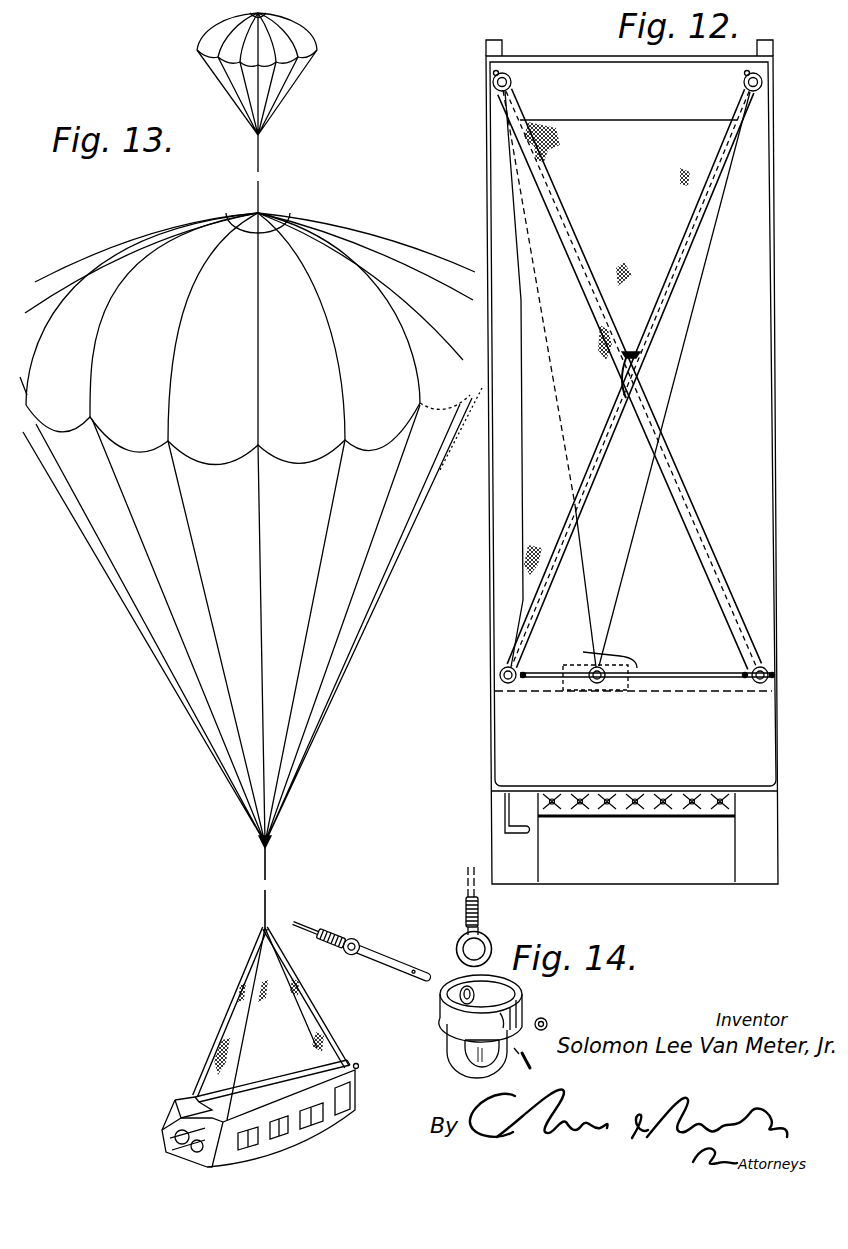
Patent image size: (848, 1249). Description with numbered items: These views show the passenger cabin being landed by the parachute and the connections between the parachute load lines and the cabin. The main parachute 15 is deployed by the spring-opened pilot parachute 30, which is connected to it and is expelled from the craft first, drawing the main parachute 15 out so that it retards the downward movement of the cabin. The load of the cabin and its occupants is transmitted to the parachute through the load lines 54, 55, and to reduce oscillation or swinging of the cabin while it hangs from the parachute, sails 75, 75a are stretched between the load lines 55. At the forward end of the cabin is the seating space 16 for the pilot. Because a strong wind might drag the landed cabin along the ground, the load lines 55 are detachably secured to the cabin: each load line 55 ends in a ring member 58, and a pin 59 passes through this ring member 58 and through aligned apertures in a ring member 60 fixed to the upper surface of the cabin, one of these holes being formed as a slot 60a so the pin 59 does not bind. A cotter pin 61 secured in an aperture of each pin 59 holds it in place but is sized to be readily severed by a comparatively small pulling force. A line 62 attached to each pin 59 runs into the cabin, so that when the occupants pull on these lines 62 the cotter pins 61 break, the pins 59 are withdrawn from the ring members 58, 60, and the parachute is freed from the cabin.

In FIG. 13, the main parachute 15 is at (400, 240).
In FIG. 12, the seating space for the pilot 16 is at (622, 817).
In FIG. 13, the pilot parachute 30 is at (307, 42).
In FIG. 13, the load line 54 is at (263, 893).
In FIG. 13, the load lines 55 is at (230, 1027).
In FIG. 14, the ring members 58 is at (487, 945).
In FIG. 14, the pins 59 is at (398, 963).
In FIG. 14, the ring members 60 is at (453, 1028).
In FIG. 14, the slot 60a is at (453, 998).
In FIG. 14, the cotter pins 61 is at (534, 1043).
In FIG. 12, the line 62 is at (612, 590).
In FIG. 13, the line 62 is at (290, 1082).
In FIG. 12, the sail 75 is at (630, 379).
In FIG. 13, the sail 75 is at (248, 987).
In FIG. 12, the sail 75a is at (630, 378).
In FIG. 13, the sail 75a is at (313, 1015).